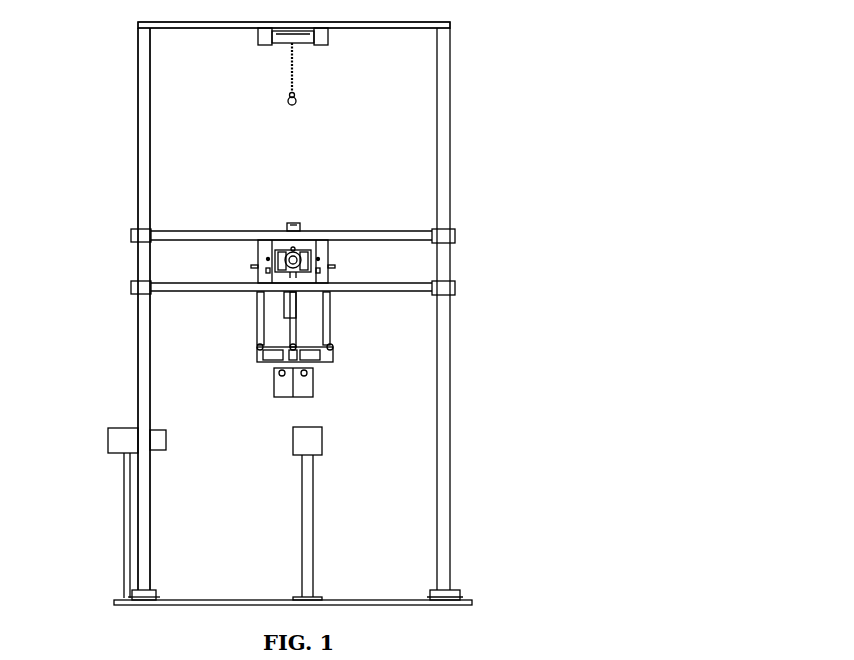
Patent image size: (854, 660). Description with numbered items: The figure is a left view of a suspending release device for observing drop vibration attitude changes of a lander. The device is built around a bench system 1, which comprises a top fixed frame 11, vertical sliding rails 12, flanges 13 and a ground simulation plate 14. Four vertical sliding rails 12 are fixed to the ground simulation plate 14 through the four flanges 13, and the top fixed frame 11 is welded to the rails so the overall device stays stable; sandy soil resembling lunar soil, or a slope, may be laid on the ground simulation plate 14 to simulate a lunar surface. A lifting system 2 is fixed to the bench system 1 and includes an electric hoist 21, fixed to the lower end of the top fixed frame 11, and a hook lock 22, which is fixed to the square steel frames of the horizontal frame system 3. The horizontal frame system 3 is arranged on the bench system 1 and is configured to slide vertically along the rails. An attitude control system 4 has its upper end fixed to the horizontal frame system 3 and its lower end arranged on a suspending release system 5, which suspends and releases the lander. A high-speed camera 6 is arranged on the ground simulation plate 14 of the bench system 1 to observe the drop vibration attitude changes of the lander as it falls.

The bench system 1 is at (452, 168).
The top fixed frame 11 is at (163, 26).
The vertical sliding rails 12 is at (137, 153).
The flanges 13 is at (448, 592).
The ground simulation plate 14 is at (190, 600).
The lifting system 2 is at (375, 58).
The electric hoist 21 is at (312, 62).
The hook lock 22 is at (302, 226).
The horizontal frame system 3 is at (338, 259).
The attitude control system 4 is at (338, 323).
The suspending release system 5 is at (330, 368).
The high-speed camera 6 is at (106, 440).